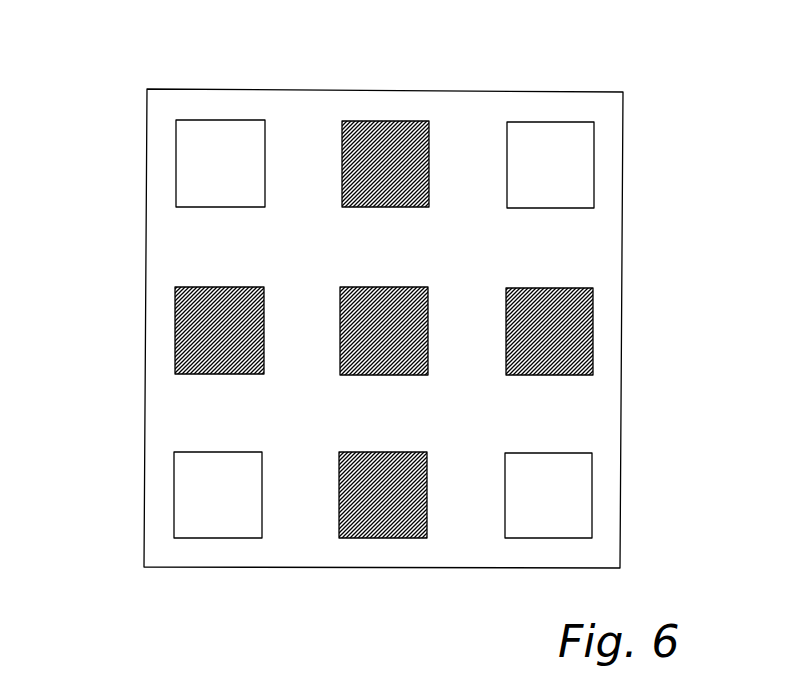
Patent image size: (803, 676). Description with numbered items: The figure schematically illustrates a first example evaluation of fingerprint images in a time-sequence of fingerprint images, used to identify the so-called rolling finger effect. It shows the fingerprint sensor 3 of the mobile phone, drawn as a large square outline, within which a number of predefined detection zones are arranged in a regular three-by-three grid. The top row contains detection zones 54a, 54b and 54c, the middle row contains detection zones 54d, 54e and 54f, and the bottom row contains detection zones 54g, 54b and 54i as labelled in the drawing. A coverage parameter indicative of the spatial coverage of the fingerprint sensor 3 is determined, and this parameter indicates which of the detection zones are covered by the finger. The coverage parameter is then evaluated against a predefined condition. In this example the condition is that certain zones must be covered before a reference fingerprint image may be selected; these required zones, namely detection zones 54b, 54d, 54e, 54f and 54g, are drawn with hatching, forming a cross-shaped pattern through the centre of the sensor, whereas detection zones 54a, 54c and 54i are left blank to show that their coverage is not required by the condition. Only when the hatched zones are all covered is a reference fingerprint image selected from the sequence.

The fingerprint sensor 3 is at (147, 248).
The detection zone 54a is at (176, 157).
The detection zone 54b is at (395, 120).
The detection zone 54c is at (594, 175).
The detection zone 54d is at (175, 331).
The detection zone 54e is at (405, 375).
The detection zone 54f is at (593, 348).
The detection zone 54g is at (174, 507).
The detection zone 54i is at (592, 522).